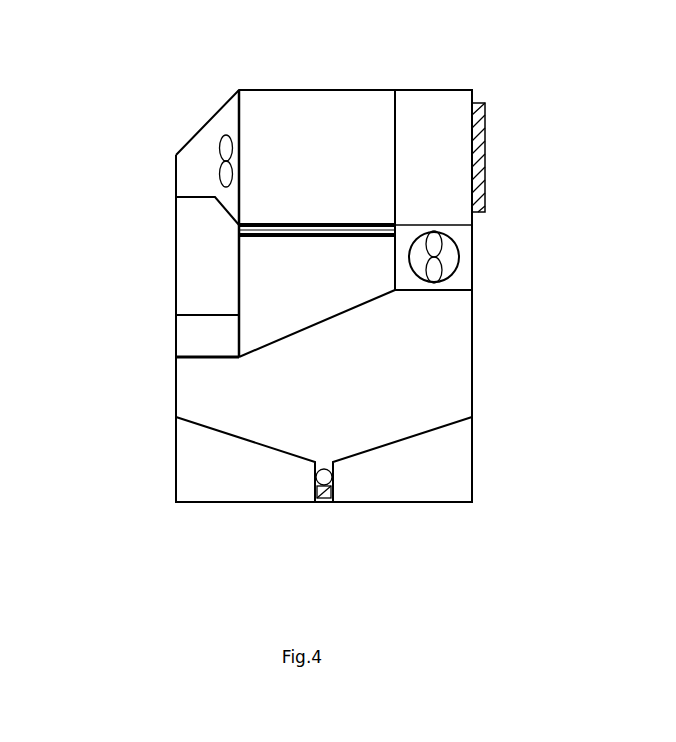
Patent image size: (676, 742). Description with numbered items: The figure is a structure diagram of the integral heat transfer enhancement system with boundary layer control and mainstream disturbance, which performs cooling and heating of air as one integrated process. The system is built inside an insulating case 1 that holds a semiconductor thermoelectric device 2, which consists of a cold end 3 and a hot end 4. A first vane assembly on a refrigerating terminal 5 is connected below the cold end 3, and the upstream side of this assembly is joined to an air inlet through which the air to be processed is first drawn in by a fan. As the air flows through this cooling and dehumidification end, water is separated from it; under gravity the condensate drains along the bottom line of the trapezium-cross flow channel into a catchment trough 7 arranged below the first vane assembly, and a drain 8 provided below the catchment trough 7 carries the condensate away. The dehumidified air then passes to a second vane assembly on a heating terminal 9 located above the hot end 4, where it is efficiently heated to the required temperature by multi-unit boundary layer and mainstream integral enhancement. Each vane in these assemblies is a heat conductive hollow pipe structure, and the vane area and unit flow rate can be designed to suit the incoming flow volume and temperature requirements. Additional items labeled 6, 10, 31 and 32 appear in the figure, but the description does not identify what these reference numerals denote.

The insulating case 1 is at (176, 178).
The semiconductor thermoelectric device 2 is at (307, 234).
The cold end 3 is at (358, 237).
The hot end 4 is at (340, 221).
The refrigerating terminal 5 is at (313, 280).
The fan 6 is at (472, 257).
The catchment trough 7 is at (230, 435).
The drain 8 is at (317, 494).
The heating terminal 9 is at (338, 167).
The air outlet 10 is at (480, 147).
The air inlet 31 is at (268, 297).
The air flow direction 32 is at (298, 147).